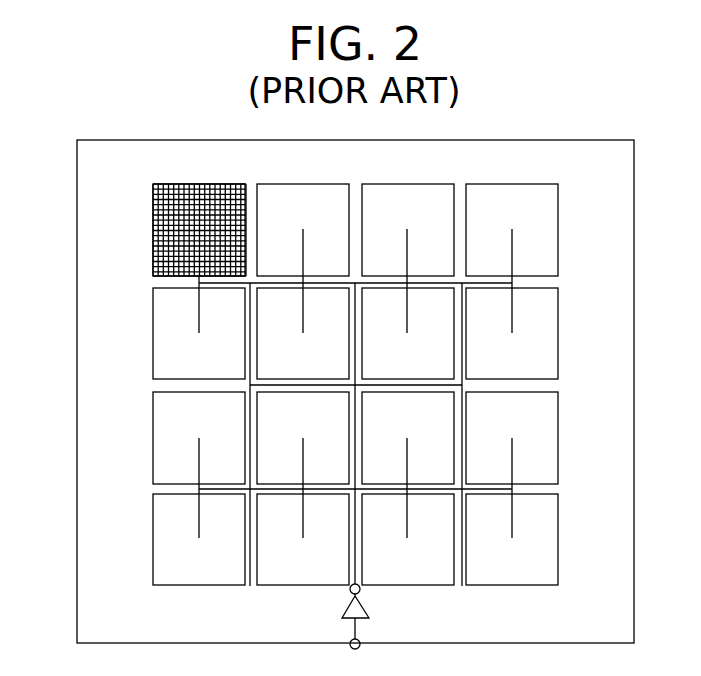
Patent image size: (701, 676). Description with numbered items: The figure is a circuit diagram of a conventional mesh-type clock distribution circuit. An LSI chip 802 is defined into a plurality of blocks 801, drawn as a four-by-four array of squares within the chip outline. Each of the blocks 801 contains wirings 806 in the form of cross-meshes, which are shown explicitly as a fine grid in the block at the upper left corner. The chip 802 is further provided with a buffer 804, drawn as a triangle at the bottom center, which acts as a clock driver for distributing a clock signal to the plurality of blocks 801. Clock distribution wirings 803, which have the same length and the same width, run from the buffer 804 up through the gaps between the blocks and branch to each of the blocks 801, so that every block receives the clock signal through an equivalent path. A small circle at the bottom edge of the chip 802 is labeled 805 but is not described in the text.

The block 801 is at (152, 268).
The LSI chip 802 is at (85, 598).
The clock distribution wiring 803 is at (199, 305).
The buffer 804 is at (367, 603).
The input terminal 805 is at (362, 643).
The wirings 806 is at (177, 220).